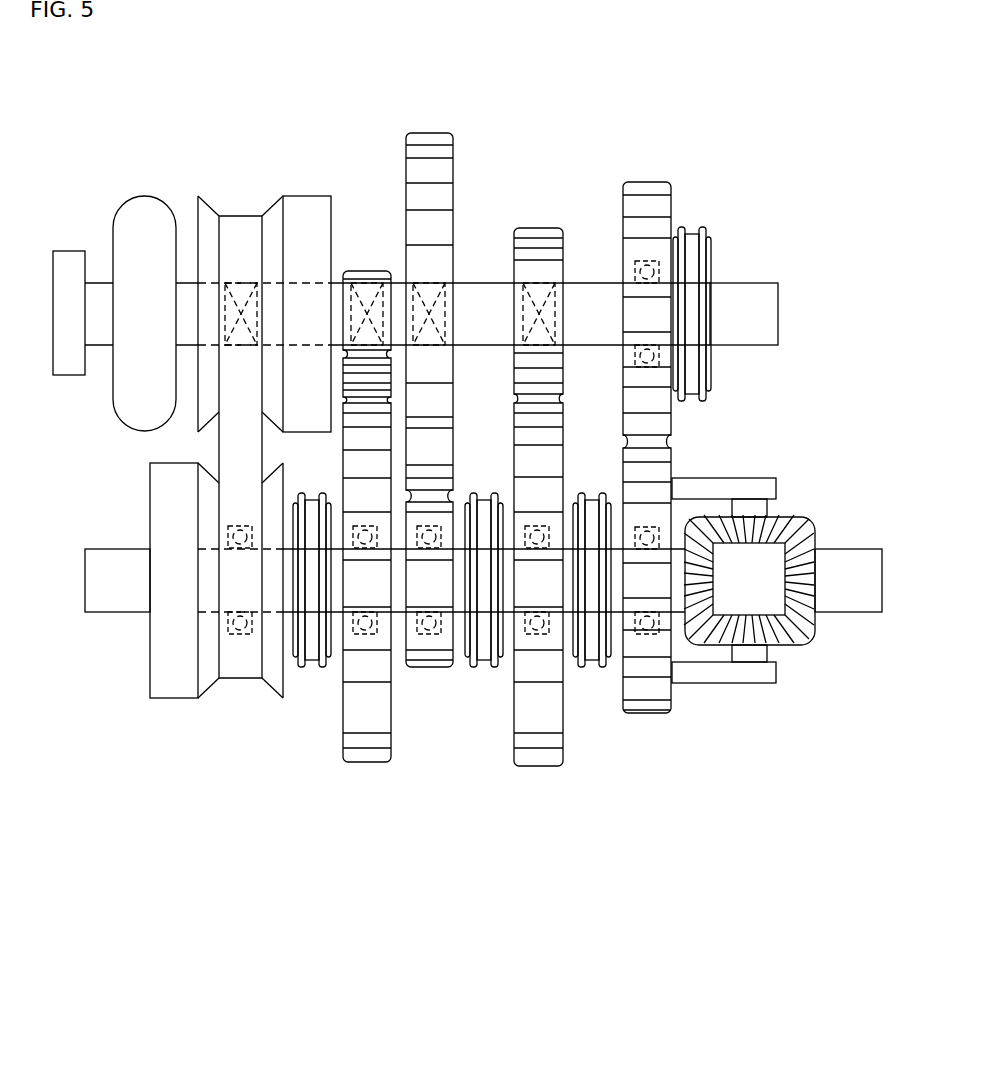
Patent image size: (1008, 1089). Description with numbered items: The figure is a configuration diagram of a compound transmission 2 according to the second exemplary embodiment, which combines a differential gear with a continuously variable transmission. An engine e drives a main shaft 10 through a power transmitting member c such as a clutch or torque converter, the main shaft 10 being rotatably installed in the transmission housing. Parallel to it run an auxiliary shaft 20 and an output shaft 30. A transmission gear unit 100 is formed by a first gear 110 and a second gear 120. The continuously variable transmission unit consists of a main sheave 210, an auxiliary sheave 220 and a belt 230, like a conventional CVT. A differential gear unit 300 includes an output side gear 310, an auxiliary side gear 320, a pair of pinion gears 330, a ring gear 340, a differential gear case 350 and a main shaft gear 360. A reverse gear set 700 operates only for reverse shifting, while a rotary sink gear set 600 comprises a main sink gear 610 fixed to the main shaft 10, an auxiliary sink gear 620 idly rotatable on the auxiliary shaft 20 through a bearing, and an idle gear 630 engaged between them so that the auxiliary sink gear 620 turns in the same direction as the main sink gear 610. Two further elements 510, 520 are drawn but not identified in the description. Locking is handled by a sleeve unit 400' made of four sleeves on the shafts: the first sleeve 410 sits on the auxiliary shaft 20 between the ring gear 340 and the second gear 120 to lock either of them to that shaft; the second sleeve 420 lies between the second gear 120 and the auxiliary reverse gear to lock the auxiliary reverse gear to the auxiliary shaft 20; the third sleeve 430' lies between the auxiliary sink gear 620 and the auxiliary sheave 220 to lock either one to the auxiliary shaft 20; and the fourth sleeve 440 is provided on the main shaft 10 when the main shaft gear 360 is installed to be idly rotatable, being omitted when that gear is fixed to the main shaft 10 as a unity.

The compound transmission 2 is at (63, 66).
The engine e is at (68, 260).
The power transmitting member c is at (145, 212).
The main shaft 10 is at (765, 320).
The auxiliary shaft 20 is at (124, 605).
The output shaft 30 is at (866, 556).
The transmission gear unit 100 is at (322, 501).
The first gear 110 is at (535, 228).
The second gear 120 is at (540, 755).
The main sheave 210 is at (205, 403).
The auxiliary sheave 220 is at (157, 520).
The belt 230 is at (230, 450).
The differential gear unit 300 is at (450, 547).
The output side gear 310 is at (812, 538).
The auxiliary side gear 320 is at (682, 517).
The pinion gears 330 is at (793, 512).
The ring gear 340 is at (646, 705).
The differential gear case 350 is at (692, 672).
The main shaft gear 360 is at (647, 190).
The sleeve unit 400' is at (399, 550).
The first sleeve 410 is at (590, 655).
The second sleeve 420 is at (485, 655).
The third sleeve 430' is at (256, 625).
The fourth sleeve 440 is at (692, 237).
The third gear 510 is at (435, 135).
The fourth gear 520 is at (440, 665).
The rotary sink gear set 600 is at (408, 93).
The main sink gear 610 is at (370, 272).
The auxiliary sink gear 620 is at (352, 435).
The idle gear 630 is at (350, 372).
The reverse gear set 700 is at (353, 585).